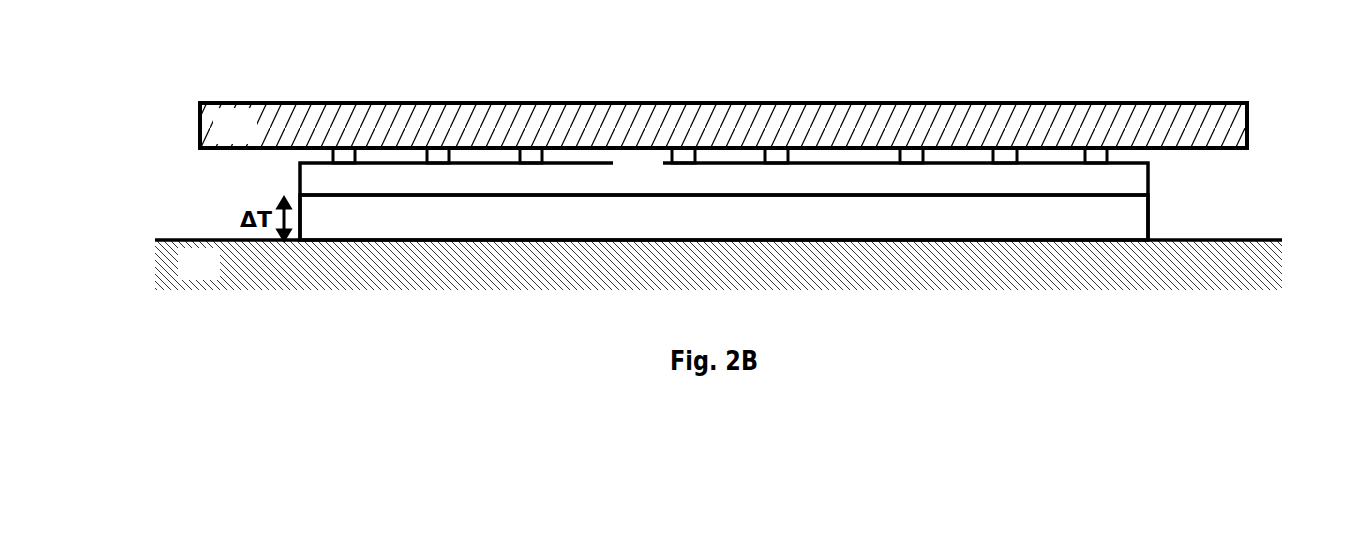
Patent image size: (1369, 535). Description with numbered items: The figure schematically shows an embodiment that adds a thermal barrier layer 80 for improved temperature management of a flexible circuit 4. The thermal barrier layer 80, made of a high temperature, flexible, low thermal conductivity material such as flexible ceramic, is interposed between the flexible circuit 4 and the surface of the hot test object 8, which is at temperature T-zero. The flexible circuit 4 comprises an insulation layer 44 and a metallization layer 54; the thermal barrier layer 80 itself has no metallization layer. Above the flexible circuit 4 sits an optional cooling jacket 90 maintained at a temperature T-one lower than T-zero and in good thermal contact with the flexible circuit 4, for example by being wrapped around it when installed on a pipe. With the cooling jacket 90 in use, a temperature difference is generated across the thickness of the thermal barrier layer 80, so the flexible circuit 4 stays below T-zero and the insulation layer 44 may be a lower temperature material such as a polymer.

The cooling jacket 90 is at (1232, 120).
The metallization layer 54 is at (1097, 155).
The insulation layer 44 is at (1140, 183).
The thermal barrier layer 80 is at (1130, 212).
The hot test object 8 is at (1035, 268).
The flexible circuit 4 is at (764, 199).